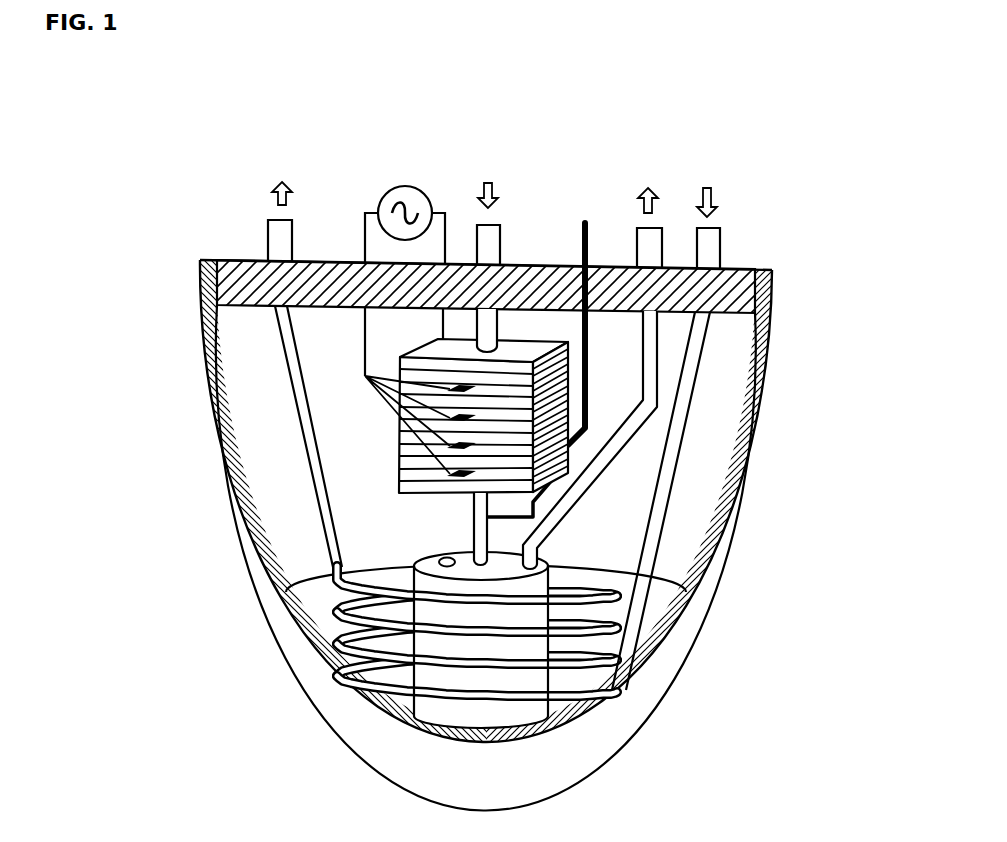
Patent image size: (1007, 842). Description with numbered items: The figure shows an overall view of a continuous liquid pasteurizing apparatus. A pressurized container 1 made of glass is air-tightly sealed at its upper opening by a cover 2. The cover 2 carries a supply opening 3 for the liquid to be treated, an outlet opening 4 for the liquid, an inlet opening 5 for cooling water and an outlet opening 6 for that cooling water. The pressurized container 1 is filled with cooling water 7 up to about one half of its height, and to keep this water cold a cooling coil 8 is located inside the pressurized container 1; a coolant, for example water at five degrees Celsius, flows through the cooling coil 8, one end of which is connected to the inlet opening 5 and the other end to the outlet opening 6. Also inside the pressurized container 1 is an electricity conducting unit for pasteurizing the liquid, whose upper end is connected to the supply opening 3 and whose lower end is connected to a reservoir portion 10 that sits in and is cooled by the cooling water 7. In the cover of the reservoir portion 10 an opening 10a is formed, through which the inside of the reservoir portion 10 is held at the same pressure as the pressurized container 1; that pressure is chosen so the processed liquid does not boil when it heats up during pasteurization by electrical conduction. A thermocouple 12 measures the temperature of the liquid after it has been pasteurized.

The pressurized container 1 is at (748, 492).
The cover 2 is at (262, 281).
The supply opening 3 is at (478, 244).
The outlet opening 4 is at (637, 257).
The inlet opening 5 is at (717, 250).
The outlet opening 6 is at (277, 246).
The cooling water 7 is at (468, 743).
The cooling coil 8 is at (336, 641).
The reservoir portion 10 is at (443, 710).
The opening 10a is at (447, 557).
The thermocouple 12 is at (583, 250).